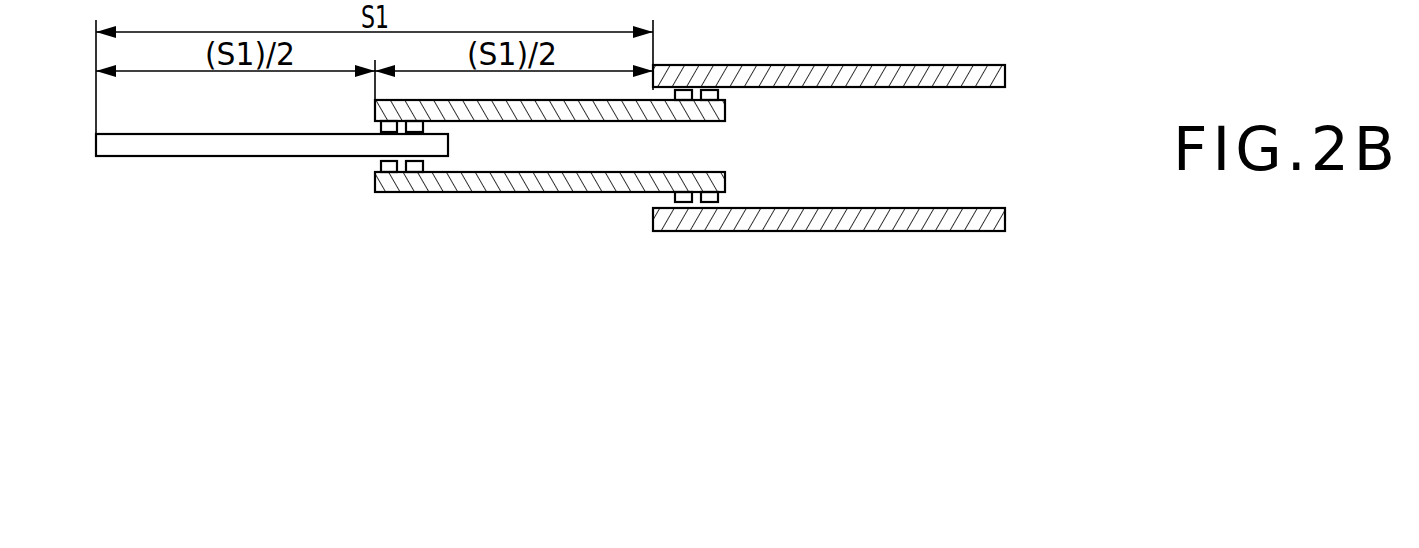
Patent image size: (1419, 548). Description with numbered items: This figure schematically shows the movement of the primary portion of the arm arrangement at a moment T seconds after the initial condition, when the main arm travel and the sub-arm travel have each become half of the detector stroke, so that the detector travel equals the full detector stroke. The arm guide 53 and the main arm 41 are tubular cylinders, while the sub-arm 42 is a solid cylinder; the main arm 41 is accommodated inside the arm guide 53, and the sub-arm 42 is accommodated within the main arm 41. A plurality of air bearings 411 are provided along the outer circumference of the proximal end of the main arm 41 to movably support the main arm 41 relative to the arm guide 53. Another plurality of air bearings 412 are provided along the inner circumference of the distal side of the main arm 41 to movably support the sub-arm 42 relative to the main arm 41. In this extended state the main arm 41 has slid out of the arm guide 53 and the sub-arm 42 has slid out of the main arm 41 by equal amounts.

The main arm 41 is at (553, 193).
The air bearings 411 is at (690, 96).
The air bearings 412 is at (392, 130).
The sub-arm 42 is at (229, 156).
The arm guide 53 is at (863, 231).